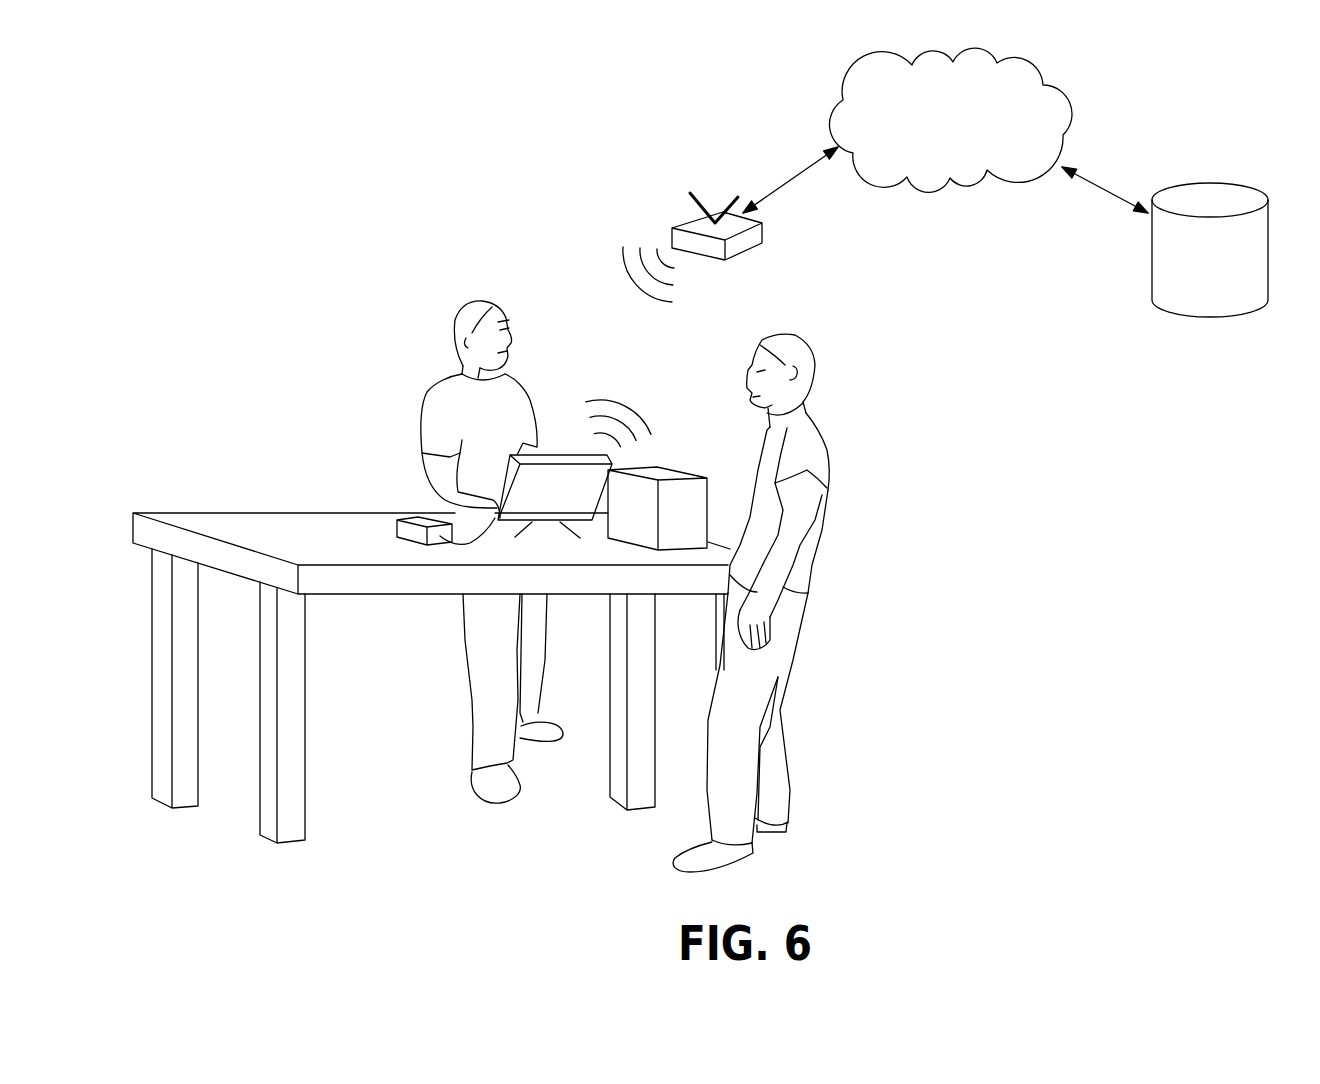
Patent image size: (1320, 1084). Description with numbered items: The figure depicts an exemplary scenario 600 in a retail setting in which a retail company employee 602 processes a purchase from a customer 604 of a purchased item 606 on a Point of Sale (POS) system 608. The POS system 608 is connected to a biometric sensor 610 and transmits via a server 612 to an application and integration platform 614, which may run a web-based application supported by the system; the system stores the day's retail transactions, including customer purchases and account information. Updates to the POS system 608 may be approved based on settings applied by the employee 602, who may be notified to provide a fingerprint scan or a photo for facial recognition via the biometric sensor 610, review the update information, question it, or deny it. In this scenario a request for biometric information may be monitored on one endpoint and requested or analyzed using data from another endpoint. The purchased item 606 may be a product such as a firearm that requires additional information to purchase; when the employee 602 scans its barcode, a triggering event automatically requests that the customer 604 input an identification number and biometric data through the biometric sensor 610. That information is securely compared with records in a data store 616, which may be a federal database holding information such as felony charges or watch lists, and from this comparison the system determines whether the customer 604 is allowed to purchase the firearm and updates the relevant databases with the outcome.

The exemplary scenario 600 is at (258, 250).
The retail company employee 602 is at (430, 390).
The customer 604 is at (828, 423).
The purchased item 606 is at (665, 467).
The Point of Sale (POS) system 608 is at (542, 502).
The biometric sensor 610 is at (413, 520).
The server 612 is at (680, 226).
The application and integration platform 614 is at (850, 72).
The data store 616 is at (1220, 182).